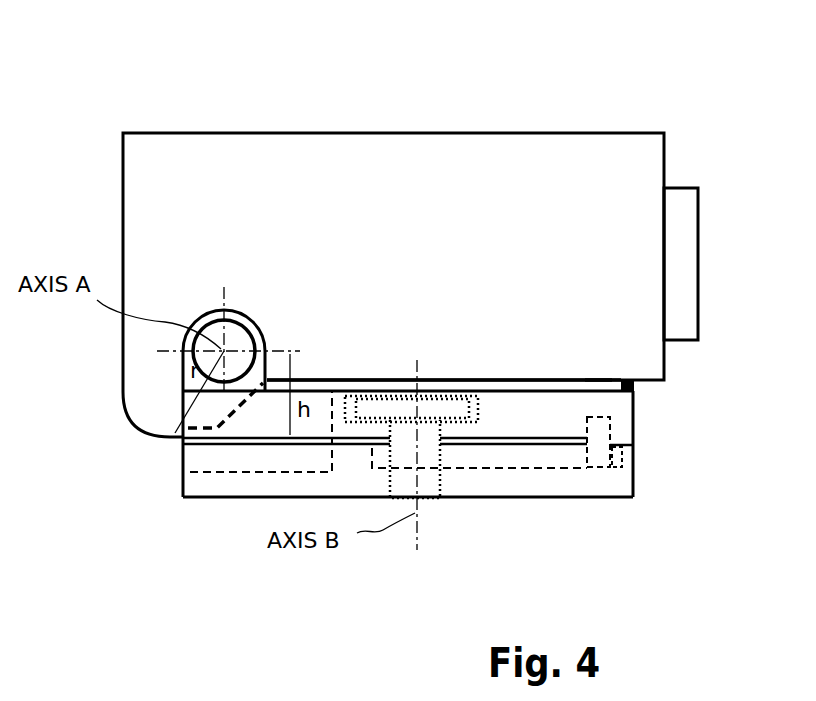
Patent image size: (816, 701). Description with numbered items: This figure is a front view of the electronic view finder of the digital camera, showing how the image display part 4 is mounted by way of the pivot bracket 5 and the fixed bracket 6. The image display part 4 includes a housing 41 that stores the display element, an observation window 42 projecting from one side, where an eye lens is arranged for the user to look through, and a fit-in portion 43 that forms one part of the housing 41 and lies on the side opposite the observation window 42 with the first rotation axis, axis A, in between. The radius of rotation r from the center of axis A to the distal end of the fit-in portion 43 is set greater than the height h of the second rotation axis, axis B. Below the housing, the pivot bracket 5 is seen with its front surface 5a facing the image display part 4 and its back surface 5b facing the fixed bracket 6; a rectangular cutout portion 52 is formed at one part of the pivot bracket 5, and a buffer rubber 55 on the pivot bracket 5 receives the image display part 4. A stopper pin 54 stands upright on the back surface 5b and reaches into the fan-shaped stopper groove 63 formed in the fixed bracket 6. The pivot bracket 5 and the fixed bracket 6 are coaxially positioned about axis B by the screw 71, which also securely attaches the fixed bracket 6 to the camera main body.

The image display part 4 is at (624, 107).
The housing 41 is at (435, 148).
The observation window 42 is at (698, 217).
The fit-in portion 43 is at (152, 408).
The pivot bracket 5 is at (615, 411).
The front surface 5a is at (597, 380).
The back surface 5b is at (622, 468).
The fixed bracket 6 is at (619, 452).
The cutout portion 52 is at (192, 457).
The stopper pin 54 is at (600, 457).
The buffer rubber 55 is at (634, 387).
The stopper groove 63 is at (535, 458).
The screw 71 is at (443, 482).